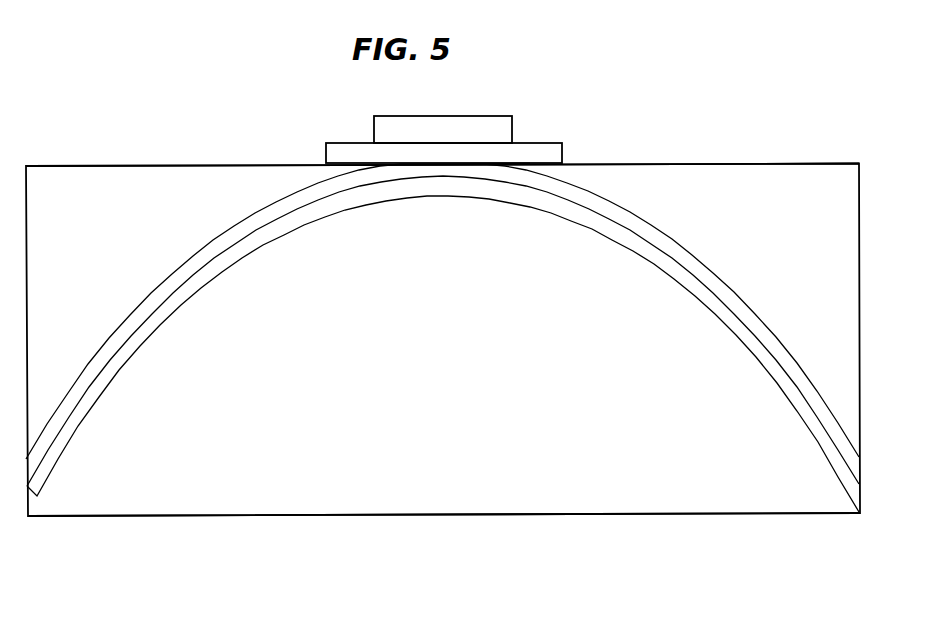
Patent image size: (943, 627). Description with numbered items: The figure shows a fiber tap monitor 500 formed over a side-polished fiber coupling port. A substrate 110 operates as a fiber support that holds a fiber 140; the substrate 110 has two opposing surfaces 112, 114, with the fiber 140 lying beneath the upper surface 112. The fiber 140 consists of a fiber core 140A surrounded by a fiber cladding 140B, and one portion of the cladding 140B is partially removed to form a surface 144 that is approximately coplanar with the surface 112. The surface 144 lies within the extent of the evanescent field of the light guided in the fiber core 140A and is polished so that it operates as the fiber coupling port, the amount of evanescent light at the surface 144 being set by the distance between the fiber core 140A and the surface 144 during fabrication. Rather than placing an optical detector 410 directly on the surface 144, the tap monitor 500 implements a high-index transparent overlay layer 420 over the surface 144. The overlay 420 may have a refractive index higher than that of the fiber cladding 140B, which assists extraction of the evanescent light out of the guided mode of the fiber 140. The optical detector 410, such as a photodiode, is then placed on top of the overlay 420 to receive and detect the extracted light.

The substrate 110 is at (462, 479).
The surface 112 is at (234, 166).
The surface 114 is at (320, 516).
The fiber 140 is at (442, 338).
The fiber core 140A is at (673, 263).
The fiber cladding 140B is at (680, 280).
The surface 144 is at (498, 165).
The optical detector 410 is at (507, 115).
The high-index transparent overlay layer 420 is at (562, 148).
The fiber tap monitor 500 is at (270, 108).